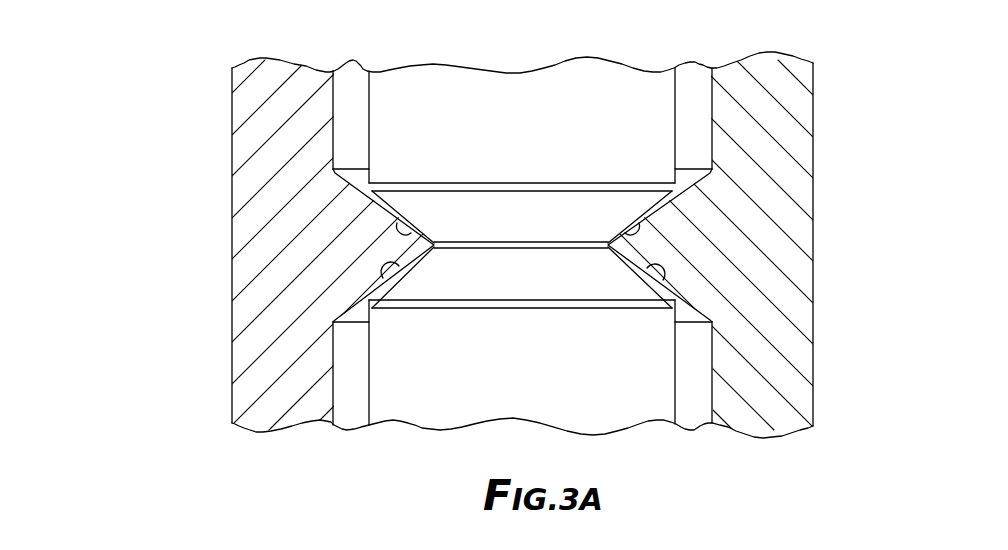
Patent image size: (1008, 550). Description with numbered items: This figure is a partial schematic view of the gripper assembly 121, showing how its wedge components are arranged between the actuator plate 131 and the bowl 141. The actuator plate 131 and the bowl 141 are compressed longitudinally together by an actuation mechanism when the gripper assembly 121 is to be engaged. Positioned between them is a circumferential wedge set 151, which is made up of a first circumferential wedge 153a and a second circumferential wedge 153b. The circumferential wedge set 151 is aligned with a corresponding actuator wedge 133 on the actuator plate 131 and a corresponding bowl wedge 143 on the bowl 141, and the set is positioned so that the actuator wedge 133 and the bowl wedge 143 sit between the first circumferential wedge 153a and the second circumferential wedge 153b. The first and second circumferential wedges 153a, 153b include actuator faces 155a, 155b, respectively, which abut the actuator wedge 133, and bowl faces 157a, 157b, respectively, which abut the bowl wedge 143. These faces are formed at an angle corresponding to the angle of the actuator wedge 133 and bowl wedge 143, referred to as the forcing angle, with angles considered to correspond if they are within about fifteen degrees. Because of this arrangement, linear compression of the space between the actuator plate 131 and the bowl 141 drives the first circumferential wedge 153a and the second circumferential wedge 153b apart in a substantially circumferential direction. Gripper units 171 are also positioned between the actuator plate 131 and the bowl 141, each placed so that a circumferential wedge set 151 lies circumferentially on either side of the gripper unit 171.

The gripper assembly 121 is at (135, 61).
The actuator plate 131 is at (257, 258).
The actuator wedge 133 is at (358, 245).
The bowl 141 is at (787, 240).
The bowl wedge 143 is at (690, 330).
The circumferential wedge set 151 is at (362, 182).
The first circumferential wedge 153a is at (643, 205).
The second circumferential wedge 153b is at (643, 265).
The actuator face 155a is at (399, 233).
The actuator face 155b is at (378, 284).
The bowl face 157a is at (612, 223).
The bowl face 157b is at (670, 280).
The gripper unit 171 is at (557, 138).